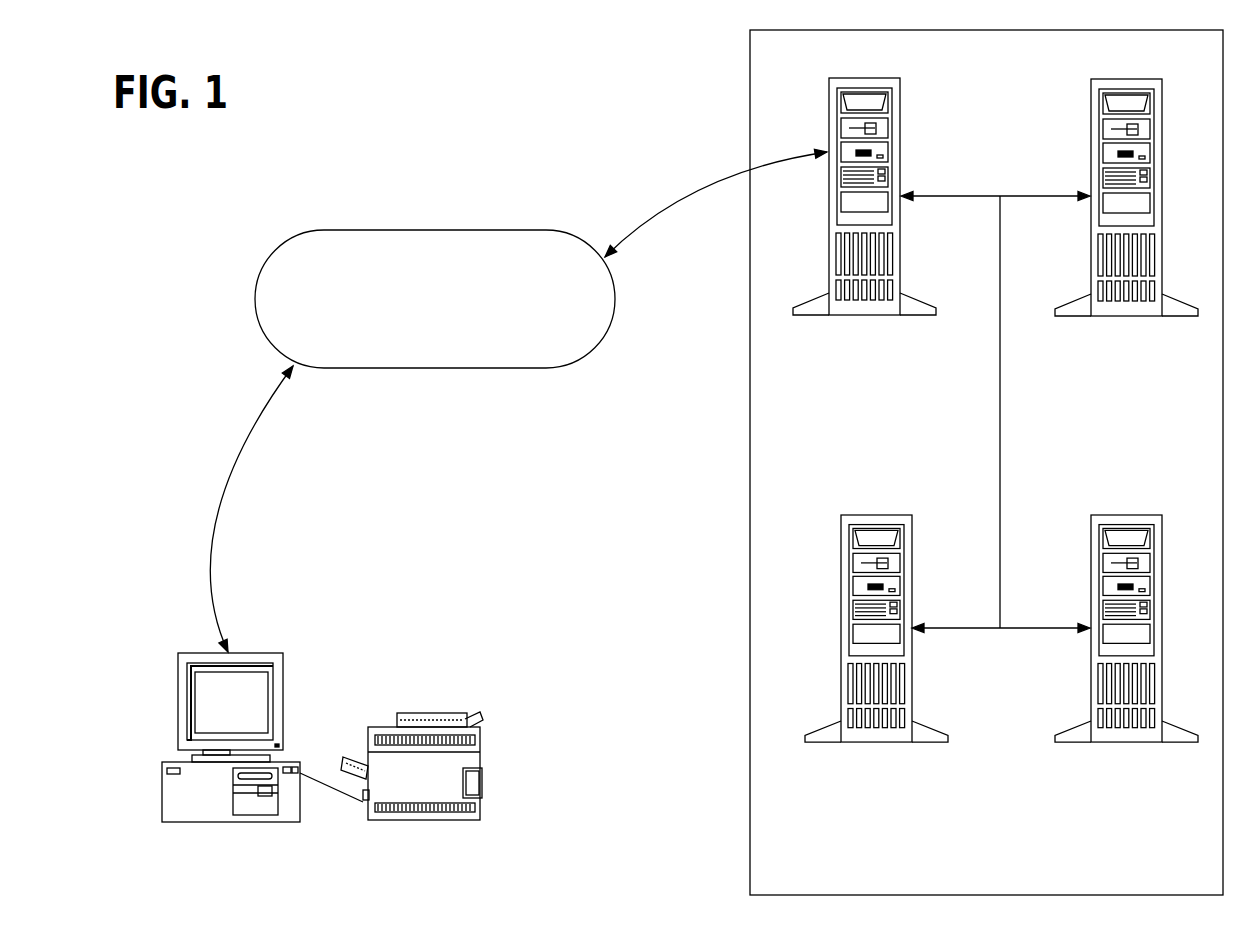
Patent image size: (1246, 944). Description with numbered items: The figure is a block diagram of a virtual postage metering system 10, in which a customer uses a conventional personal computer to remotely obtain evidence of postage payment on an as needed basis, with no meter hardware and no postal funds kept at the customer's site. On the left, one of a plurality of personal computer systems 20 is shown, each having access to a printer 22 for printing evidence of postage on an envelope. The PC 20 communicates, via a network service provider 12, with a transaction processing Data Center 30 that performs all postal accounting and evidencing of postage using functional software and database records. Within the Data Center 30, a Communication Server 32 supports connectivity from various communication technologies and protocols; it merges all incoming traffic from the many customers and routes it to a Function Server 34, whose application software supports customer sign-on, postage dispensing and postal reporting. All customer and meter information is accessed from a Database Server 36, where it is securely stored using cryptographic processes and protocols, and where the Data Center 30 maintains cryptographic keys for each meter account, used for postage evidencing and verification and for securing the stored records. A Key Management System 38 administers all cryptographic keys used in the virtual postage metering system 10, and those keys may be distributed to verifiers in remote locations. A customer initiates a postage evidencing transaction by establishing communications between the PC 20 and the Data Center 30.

The virtual postage metering system 10 is at (199, 241).
The network service provider 12 is at (420, 230).
The personal computer system 20 is at (118, 675).
The printer 22 is at (482, 777).
The Data Center 30 is at (750, 493).
The Communication Server 32 is at (902, 135).
The Function Server 34 is at (1091, 163).
The Database Server 36 is at (1091, 698).
The Key Management System 38 is at (912, 698).